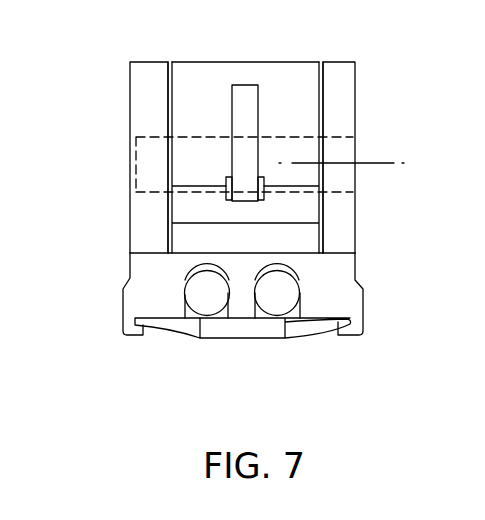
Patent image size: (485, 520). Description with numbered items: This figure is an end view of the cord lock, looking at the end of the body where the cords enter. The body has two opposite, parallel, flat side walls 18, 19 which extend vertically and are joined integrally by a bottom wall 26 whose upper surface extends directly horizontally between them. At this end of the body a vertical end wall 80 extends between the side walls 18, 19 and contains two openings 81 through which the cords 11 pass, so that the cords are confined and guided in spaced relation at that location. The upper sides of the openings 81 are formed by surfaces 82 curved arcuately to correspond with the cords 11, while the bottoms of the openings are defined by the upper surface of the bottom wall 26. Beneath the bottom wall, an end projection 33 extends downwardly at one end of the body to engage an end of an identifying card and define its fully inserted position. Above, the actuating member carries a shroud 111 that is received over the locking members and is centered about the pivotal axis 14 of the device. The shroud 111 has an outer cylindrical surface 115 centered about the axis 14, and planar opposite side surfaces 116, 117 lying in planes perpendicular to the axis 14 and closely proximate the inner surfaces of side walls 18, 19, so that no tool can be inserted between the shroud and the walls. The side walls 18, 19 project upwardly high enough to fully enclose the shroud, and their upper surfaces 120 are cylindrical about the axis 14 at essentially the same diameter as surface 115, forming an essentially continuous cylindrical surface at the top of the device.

The cords 11 is at (205, 291).
The axis 14 is at (372, 162).
The side wall 18 is at (135, 110).
The side wall 19 is at (347, 103).
The bottom wall 26 is at (192, 318).
The end projection 33 is at (247, 327).
The end wall 80 is at (150, 272).
The openings 81 is at (224, 260).
The curved surfaces 82 is at (184, 275).
The shroud 111 is at (282, 72).
The outer cylindrical surface 115 is at (208, 62).
The side surface 116 is at (172, 92).
The side surface 117 is at (322, 94).
The upper surfaces 120 is at (142, 62).